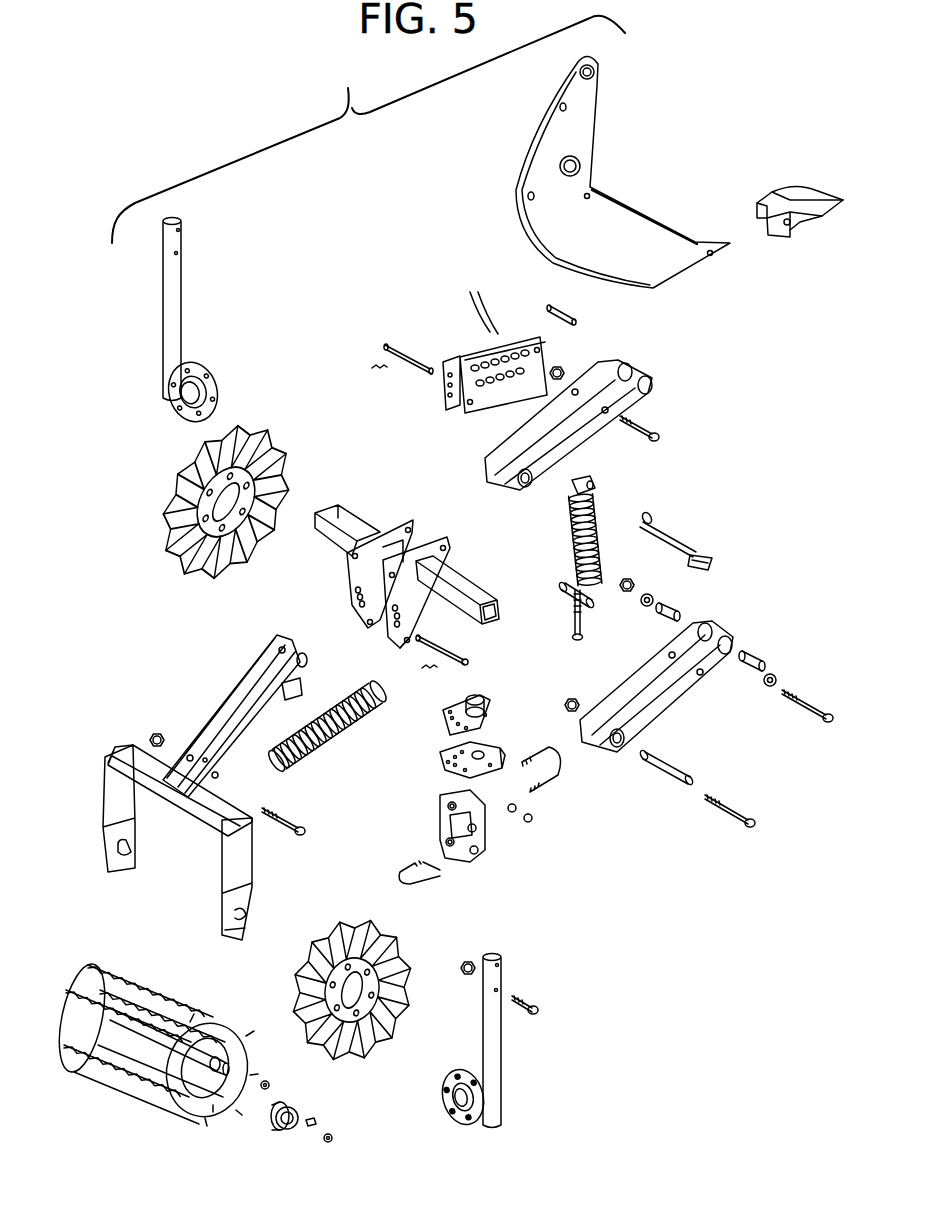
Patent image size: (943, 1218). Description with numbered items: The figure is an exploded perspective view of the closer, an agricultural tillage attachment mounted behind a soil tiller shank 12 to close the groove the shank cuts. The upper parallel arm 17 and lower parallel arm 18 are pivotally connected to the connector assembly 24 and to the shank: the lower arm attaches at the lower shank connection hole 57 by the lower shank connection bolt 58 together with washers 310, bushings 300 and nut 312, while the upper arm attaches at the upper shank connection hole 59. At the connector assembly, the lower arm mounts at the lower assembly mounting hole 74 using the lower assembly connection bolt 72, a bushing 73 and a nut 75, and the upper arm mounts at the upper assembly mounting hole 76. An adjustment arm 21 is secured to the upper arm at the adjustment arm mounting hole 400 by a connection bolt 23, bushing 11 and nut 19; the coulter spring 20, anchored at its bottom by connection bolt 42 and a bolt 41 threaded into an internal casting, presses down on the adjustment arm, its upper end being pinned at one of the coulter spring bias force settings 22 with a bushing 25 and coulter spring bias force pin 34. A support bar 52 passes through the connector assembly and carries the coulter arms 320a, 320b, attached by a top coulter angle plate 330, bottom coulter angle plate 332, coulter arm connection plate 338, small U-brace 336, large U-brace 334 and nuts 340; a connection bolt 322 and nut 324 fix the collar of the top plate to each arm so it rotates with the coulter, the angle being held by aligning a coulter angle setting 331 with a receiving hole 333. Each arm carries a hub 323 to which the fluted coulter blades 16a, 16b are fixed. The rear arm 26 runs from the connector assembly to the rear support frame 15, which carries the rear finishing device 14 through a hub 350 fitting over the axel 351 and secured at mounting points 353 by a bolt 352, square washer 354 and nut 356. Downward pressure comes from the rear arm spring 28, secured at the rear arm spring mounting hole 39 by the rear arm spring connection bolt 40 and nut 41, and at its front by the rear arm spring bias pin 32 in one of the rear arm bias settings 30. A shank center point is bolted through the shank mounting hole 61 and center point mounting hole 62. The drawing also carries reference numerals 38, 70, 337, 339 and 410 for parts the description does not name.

The bushing 11 is at (566, 313).
The tiller shank 12 is at (633, 200).
The rear finishing device 14 is at (100, 958).
The rear support frame 15 is at (118, 750).
The coulter blade 16a is at (367, 1057).
The coulter blade 16b is at (193, 578).
The upper parallel arm 17 is at (525, 428).
The lower parallel arm 18 is at (672, 706).
The nut 19 is at (563, 368).
The coulter spring 20 is at (598, 522).
The adjustment arm 21 is at (500, 382).
The coulter spring bias force settings 22 is at (484, 302).
The connection bolt 23 is at (650, 430).
The connector assembly 24 is at (380, 525).
The bushing 25 is at (586, 478).
The rear arm 26 is at (216, 715).
The rear arm spring 28 is at (328, 743).
The rear arm bias settings 30 is at (355, 603).
The rear arm spring bias pin 32 is at (455, 652).
The coulter spring bias force pin 34 is at (672, 543).
The pin 38 is at (392, 345).
The rear arm spring mounting hole 39 is at (218, 778).
The rear arm spring connection bolt 40 is at (305, 833).
The nut 41 is at (157, 735).
The connection bolt 42 is at (597, 606).
The support bar 52 is at (492, 592).
The lower shank connection hole 57 is at (534, 197).
The lower shank connection bolt 58 is at (818, 700).
The upper shank connection hole 59 is at (567, 108).
The shank mounting hole 61 is at (791, 225).
The center point mounting hole 62 is at (712, 258).
The scraper 70 is at (808, 190).
The lower assembly connection bolt 72 is at (745, 805).
The bushing 73 is at (680, 764).
The lower assembly mounting hole 74 is at (406, 648).
The nut 75 is at (576, 698).
The upper assembly mounting hole 76 is at (447, 548).
The bushings 300 is at (682, 610).
The washers 310 is at (651, 594).
The nut 312 is at (628, 579).
The coulter arm 320a is at (505, 1056).
The coulter arm 320b is at (183, 268).
The connection bolt 322 is at (531, 998).
The hub 323 is at (466, 1069).
The nut 324 is at (470, 962).
The top coulter angle plate 330 is at (490, 705).
The coulter angle setting 331 is at (450, 720).
The bottom coulter angle plate 332 is at (490, 748).
The receiving hole 333 is at (445, 762).
The large U-brace 334 is at (562, 770).
The small U-brace 336 is at (426, 882).
The holes 337 is at (450, 858).
The coulter arm connection plate 338 is at (478, 858).
The holes 339 is at (445, 822).
The nuts 340 is at (532, 821).
The hub 350 is at (288, 1130).
The axel 351 is at (213, 1105).
The bolt 352 is at (270, 1082).
The mounting points 353 is at (245, 914).
The square washer 354 is at (318, 1120).
The nut 356 is at (333, 1138).
The adjustment arm mounting hole 400 is at (608, 410).
The holes 410 is at (703, 670).